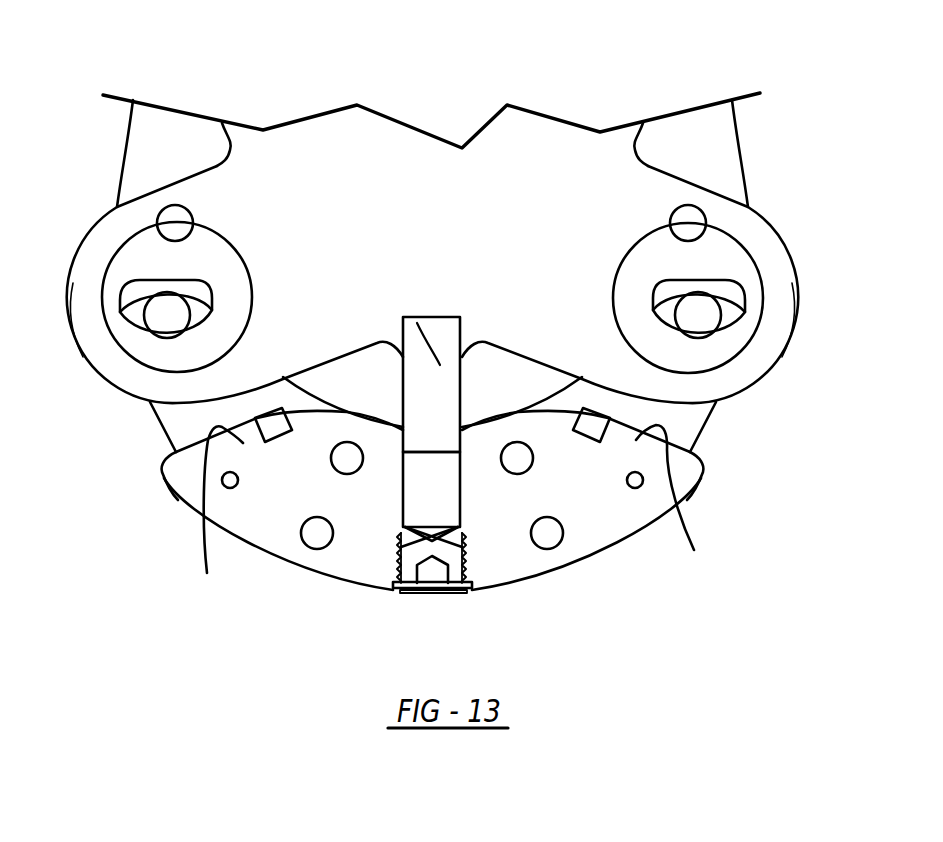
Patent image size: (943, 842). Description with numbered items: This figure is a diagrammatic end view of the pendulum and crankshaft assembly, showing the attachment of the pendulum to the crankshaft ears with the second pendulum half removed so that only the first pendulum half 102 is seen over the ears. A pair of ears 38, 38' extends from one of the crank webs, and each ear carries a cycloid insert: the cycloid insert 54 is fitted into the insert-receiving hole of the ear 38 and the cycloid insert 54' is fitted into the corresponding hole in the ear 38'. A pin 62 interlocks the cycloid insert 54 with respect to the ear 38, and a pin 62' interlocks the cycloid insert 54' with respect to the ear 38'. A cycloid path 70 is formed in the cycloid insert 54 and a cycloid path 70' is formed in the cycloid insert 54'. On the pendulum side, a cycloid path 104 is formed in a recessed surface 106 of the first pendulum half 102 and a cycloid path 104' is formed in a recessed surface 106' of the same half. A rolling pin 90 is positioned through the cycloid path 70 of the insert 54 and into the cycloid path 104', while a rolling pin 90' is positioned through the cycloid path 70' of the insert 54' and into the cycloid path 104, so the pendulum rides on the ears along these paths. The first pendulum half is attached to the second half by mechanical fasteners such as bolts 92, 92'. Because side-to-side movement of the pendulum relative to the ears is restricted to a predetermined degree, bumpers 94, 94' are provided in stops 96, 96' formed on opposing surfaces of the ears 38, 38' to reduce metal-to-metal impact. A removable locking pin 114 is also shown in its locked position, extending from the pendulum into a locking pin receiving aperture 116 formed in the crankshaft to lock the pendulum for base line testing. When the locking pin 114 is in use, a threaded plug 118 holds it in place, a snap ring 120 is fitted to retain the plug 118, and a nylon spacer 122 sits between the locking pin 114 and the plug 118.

The ear 38 is at (218, 284).
The ear 38' is at (635, 314).
The cycloid insert 54 is at (145, 284).
The cycloid insert 54' is at (708, 259).
The pin 62 is at (122, 189).
The pin 62' is at (731, 172).
The cycloid path 70 is at (125, 340).
The cycloid path 70' is at (733, 246).
The rolling pin 90 is at (137, 385).
The rolling pin 90' is at (725, 399).
The bolt 92 is at (307, 587).
The bolt 92' is at (580, 581).
The bumper 94 is at (260, 529).
The bumper 94' is at (625, 517).
The stop 96 is at (215, 516).
The stop 96' is at (678, 504).
The first pendulum half 102 is at (152, 443).
The cycloid path 104 is at (737, 355).
The cycloid path 104' is at (125, 372).
The recessed surface 106 is at (735, 474).
The recessed surface 106' is at (138, 478).
The locking pin 114 is at (440, 365).
The locking pin receiving aperture 116 is at (417, 323).
The threaded plug 118 is at (452, 545).
The snap ring 120 is at (433, 594).
The nylon spacer 122 is at (427, 470).